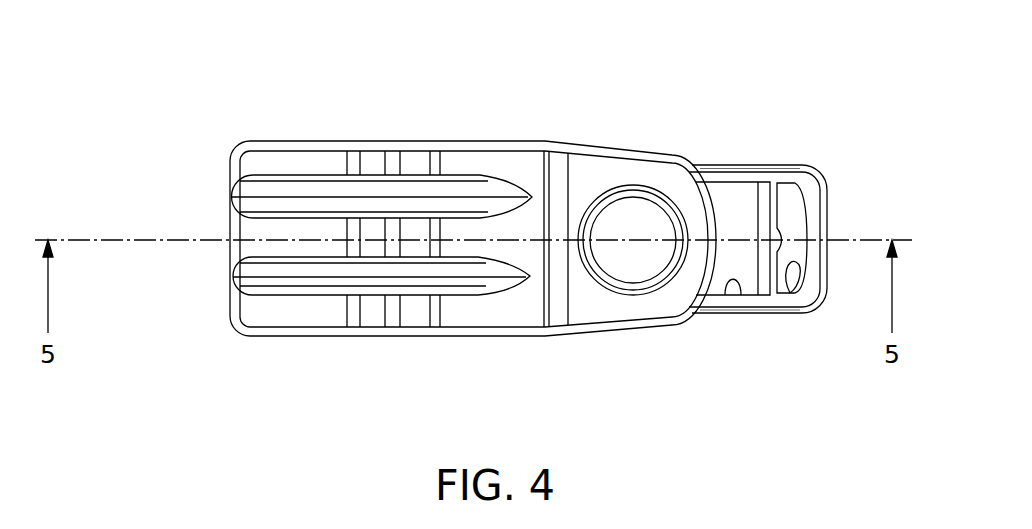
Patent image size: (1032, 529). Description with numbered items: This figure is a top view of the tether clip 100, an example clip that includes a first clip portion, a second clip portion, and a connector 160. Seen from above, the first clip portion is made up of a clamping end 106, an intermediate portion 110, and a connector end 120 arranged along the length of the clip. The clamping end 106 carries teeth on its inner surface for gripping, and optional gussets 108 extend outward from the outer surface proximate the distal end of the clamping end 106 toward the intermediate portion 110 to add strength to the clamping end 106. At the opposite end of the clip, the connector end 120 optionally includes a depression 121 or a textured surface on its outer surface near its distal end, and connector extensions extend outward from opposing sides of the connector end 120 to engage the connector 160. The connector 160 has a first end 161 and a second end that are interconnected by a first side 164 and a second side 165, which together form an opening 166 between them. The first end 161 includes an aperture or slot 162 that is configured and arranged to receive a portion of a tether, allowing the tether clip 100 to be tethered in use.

The tether clip 100 is at (787, 63).
The clamping end 106 is at (263, 163).
The gusset 108 is at (333, 275).
The intermediate portion 110 is at (513, 123).
The connector end 120 is at (653, 172).
The depression 121 is at (633, 220).
The connector 160 is at (827, 150).
The first end 161 is at (813, 202).
The aperture or slot 162 is at (797, 278).
The first side 164 is at (712, 310).
The second side 165 is at (752, 166).
The opening 166 is at (728, 283).